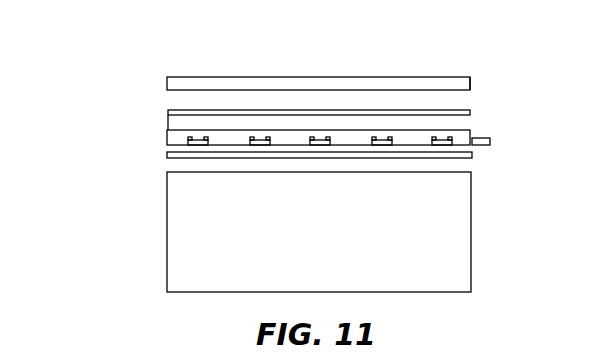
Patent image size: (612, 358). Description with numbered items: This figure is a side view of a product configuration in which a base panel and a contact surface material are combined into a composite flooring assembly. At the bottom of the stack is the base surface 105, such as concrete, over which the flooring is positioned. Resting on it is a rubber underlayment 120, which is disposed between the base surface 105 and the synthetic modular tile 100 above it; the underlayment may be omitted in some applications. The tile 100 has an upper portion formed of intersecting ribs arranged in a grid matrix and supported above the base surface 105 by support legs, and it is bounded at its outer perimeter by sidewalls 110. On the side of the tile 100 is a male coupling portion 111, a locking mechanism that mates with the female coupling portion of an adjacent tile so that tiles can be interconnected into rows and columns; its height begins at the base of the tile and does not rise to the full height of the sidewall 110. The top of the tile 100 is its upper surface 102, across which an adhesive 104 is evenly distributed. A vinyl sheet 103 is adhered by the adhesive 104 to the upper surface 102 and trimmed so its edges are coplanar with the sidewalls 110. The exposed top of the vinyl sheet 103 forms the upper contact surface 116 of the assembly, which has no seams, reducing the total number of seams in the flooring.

The synthetic modular tile 100 is at (470, 130).
The upper surface 102 is at (174, 129).
The vinyl sheet 103 is at (471, 83).
The adhesive 104 is at (470, 111).
The base surface 105 is at (471, 228).
The sidewalls 110 is at (167, 136).
The male coupling portion 111 is at (490, 144).
The upper contact surface 116 is at (212, 77).
The rubber underlayment 120 is at (167, 155).